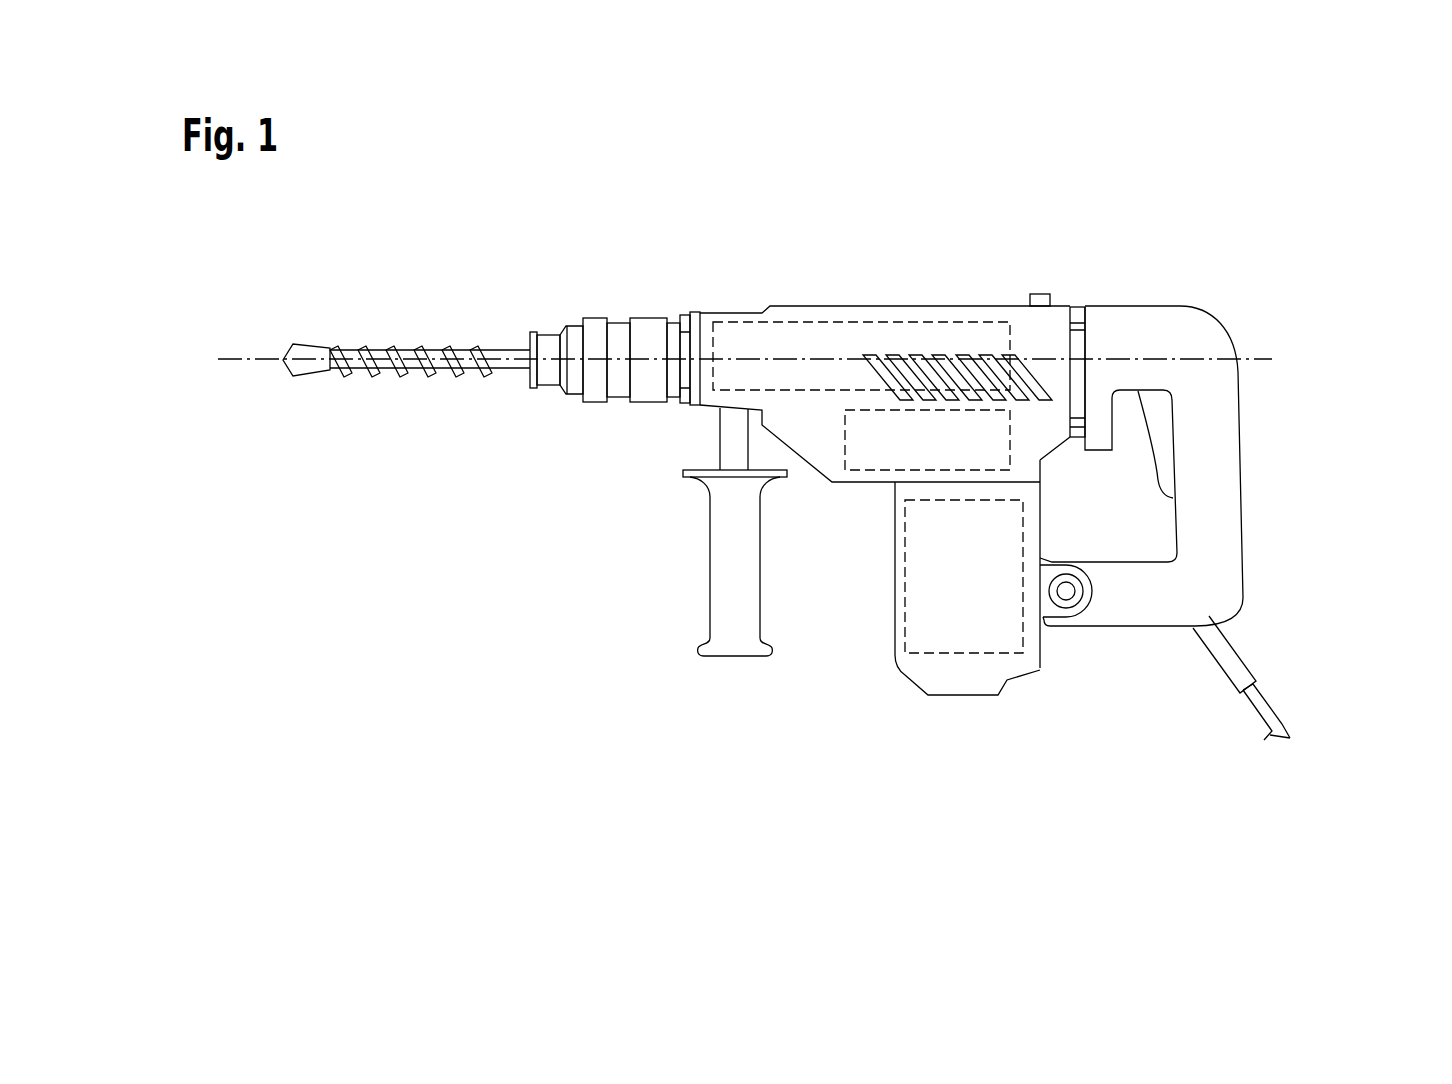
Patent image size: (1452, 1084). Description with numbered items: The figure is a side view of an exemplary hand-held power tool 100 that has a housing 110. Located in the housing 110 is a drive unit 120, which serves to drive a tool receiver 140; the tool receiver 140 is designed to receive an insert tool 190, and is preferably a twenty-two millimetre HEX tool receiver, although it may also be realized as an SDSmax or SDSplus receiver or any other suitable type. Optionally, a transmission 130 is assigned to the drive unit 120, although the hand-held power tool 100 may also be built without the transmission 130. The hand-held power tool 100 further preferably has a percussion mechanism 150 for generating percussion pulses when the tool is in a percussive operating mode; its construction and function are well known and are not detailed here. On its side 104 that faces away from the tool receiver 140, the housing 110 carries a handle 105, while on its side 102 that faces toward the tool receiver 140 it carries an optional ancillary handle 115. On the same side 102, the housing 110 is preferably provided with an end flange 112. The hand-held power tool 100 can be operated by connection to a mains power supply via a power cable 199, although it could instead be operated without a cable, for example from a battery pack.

The hand-held power tool 100 is at (1266, 287).
The side of the housing facing toward the tool receiver 102 is at (677, 416).
The side of the housing facing away from the tool receiver 104 is at (1287, 448).
The handle 105 is at (1228, 512).
The housing 110 is at (1062, 313).
The end flange 112 is at (697, 312).
The ancillary handle 115 is at (725, 593).
The drive unit 120 is at (957, 655).
The transmission 130 is at (864, 472).
The tool receiver 140 is at (620, 288).
The percussion mechanism 150 is at (927, 320).
The insert tool 190 is at (408, 348).
The power cable 199 is at (1242, 672).